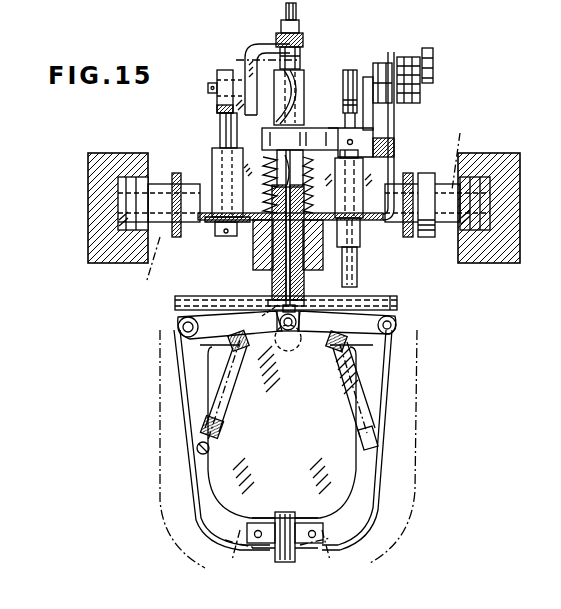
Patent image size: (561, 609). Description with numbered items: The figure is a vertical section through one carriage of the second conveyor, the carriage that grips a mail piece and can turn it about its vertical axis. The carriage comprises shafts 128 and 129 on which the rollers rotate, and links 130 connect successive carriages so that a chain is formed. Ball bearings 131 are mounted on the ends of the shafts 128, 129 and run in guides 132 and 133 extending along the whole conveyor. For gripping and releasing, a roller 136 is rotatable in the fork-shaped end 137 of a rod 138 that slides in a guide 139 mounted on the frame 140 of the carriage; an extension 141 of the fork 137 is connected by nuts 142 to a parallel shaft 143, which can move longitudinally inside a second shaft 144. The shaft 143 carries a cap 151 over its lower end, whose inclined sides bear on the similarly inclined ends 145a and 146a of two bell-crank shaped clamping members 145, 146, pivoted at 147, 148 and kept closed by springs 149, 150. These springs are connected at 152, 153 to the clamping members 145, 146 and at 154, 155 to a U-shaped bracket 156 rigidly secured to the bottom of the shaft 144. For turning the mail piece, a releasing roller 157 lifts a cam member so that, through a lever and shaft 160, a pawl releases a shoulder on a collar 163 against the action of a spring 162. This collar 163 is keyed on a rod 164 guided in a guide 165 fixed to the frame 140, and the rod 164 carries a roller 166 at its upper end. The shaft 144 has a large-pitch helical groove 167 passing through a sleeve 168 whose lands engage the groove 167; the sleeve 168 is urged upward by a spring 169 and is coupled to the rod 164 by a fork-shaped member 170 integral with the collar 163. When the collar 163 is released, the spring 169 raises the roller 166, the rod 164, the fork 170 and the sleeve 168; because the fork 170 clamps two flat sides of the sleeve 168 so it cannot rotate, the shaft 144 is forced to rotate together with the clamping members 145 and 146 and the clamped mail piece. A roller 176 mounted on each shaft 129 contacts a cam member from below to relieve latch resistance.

The shaft 128 is at (159, 239).
The shaft 129 is at (469, 152).
The links 130 is at (167, 160).
The ball bearings 131 is at (137, 190).
The guide 132 is at (123, 234).
The guide 133 is at (485, 240).
The roller 136 is at (230, 72).
The fork-shaped end 137 is at (208, 88).
The rod 138 is at (225, 240).
The guide 139 is at (212, 148).
The frame 140 is at (210, 222).
The extension 141 is at (253, 45).
The nuts 142 is at (297, 32).
The shaft 143 is at (295, 55).
The shaft 144 is at (298, 80).
The clamping member 145 is at (185, 427).
The inclined end 145a is at (315, 333).
The clamping member 146 is at (387, 415).
The inclined end 146a is at (270, 337).
The pivot 147 is at (180, 325).
The pivot 148 is at (403, 330).
The spring 149 is at (222, 398).
The spring 150 is at (348, 383).
The cap 151 is at (278, 337).
The spring connection 152 is at (200, 448).
The spring connection 153 is at (405, 452).
The spring connection 154 is at (240, 308).
The spring connection 155 is at (337, 310).
The U-shaped bracket 156 is at (395, 304).
The releasing roller 157 is at (433, 53).
The shaft 160 is at (385, 52).
The spring 162 is at (387, 138).
The collar 163 is at (340, 133).
The rod 164 is at (353, 263).
The guide 165 is at (357, 173).
The roller 166 is at (348, 72).
The helical groove 167 is at (278, 38).
The sleeve 168 is at (267, 118).
The spring 169 is at (265, 203).
The fork-shaped member 170 is at (233, 145).
The roller 176 is at (432, 230).